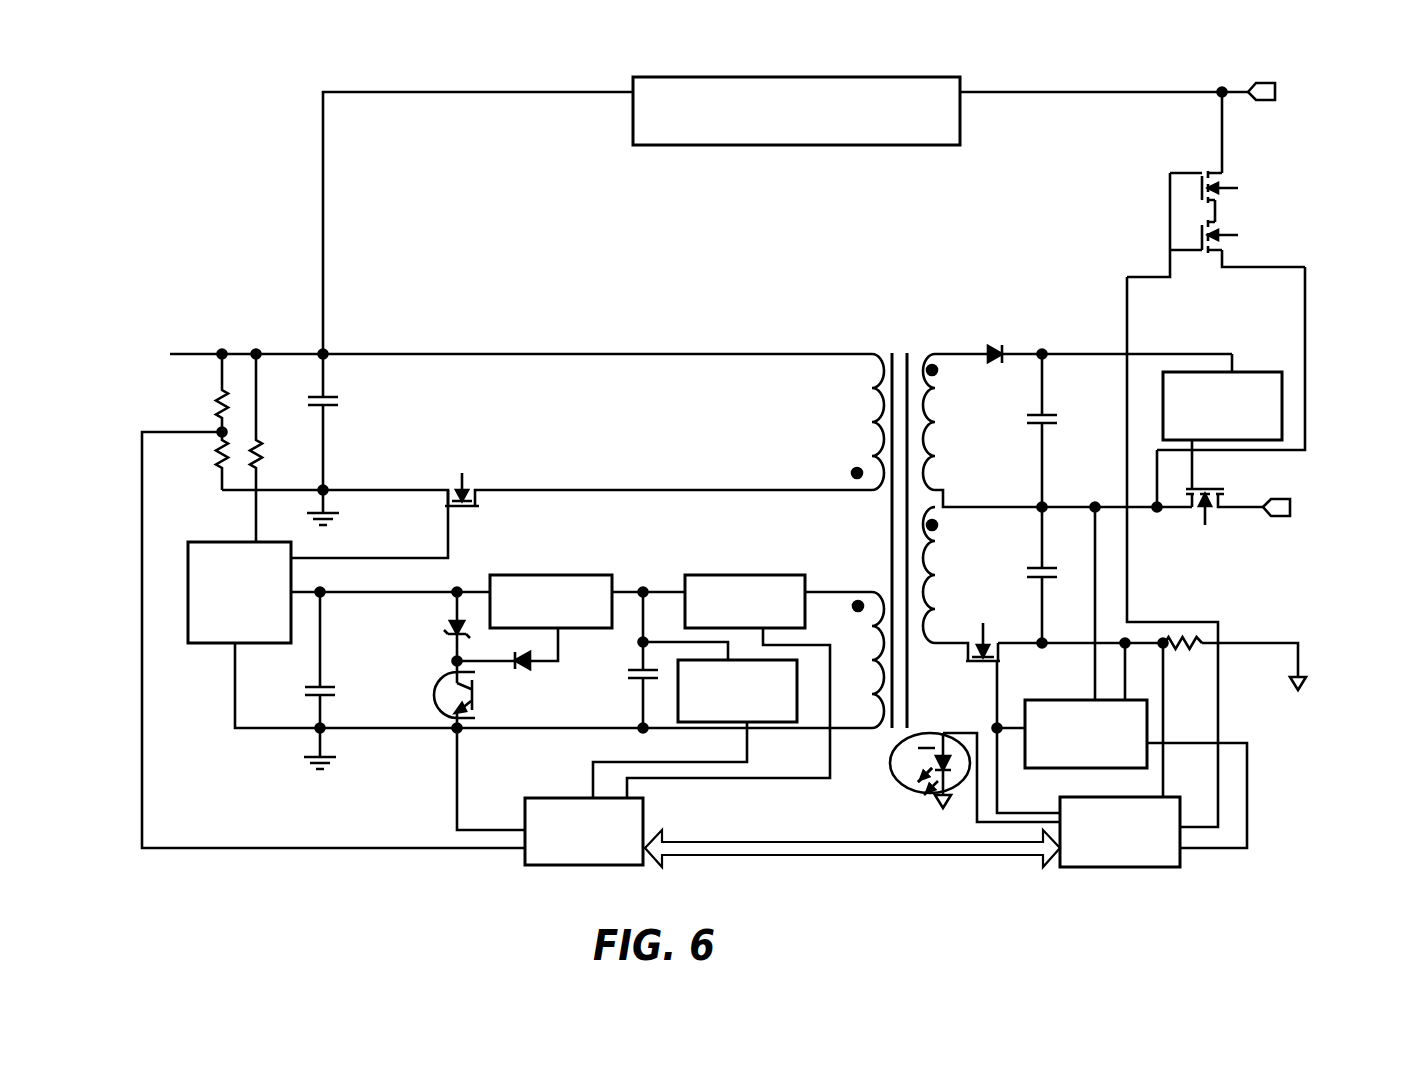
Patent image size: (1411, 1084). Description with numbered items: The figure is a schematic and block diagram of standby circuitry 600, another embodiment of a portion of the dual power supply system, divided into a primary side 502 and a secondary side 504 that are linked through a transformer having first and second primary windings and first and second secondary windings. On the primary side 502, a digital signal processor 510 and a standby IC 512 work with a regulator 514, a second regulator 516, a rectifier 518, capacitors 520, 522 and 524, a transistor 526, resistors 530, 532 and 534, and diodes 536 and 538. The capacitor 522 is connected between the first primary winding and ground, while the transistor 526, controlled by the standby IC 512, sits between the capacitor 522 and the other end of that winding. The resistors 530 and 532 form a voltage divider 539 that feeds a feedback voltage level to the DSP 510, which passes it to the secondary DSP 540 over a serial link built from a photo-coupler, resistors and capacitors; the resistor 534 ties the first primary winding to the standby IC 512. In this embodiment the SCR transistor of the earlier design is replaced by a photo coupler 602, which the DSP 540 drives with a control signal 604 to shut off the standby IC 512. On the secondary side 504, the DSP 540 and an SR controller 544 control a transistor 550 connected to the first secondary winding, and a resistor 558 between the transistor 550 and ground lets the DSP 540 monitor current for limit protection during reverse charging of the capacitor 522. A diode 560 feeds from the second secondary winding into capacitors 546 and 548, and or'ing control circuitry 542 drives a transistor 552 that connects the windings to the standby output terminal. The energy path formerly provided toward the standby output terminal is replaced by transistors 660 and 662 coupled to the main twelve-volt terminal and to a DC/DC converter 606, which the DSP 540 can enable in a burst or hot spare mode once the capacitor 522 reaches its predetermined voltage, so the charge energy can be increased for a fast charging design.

The standby circuitry 600 is at (572, 75).
The DC/DC converter 606 is at (796, 111).
The primary side 502 is at (676, 305).
The secondary side 504 is at (985, 299).
The capacitor 522 is at (334, 396).
The resistor 530 is at (219, 410).
The resistor 532 is at (228, 478).
The resistor 534 is at (262, 455).
The voltage divider 539 is at (200, 430).
The transistor 526 is at (466, 476).
The standby integrated circuit 512 is at (228, 622).
The regulator 514 is at (505, 580).
The rectifier 518 is at (705, 580).
The diode 536 is at (458, 620).
The capacitor 524 is at (330, 687).
The photo coupler 602 is at (440, 712).
The diode 538 is at (528, 664).
The capacitor 520 is at (641, 668).
The regulator 516 is at (728, 725).
The digital signal processor 510 is at (606, 866).
The digital signal processor 540 is at (1148, 868).
The SR controller 544 is at (1038, 720).
The transistor 550 is at (985, 670).
The control signal 604 is at (910, 742).
The resistor 558 is at (1186, 650).
The capacitor 548 is at (1053, 566).
The capacitor 546 is at (1052, 410).
The diode 560 is at (1001, 350).
The or'ing control circuitry 542 is at (1284, 398).
The transistor 552 is at (1224, 494).
The transistor 660 is at (1222, 170).
The transistor 662 is at (1219, 251).